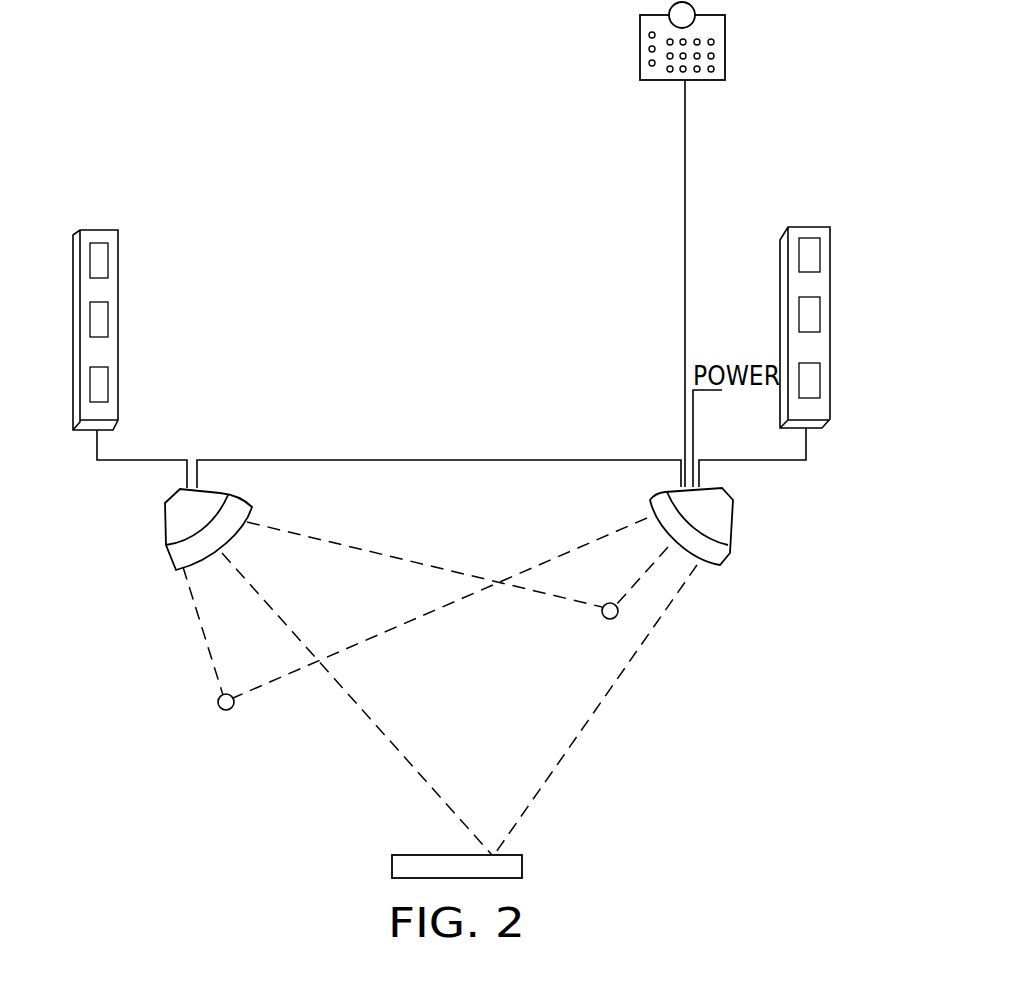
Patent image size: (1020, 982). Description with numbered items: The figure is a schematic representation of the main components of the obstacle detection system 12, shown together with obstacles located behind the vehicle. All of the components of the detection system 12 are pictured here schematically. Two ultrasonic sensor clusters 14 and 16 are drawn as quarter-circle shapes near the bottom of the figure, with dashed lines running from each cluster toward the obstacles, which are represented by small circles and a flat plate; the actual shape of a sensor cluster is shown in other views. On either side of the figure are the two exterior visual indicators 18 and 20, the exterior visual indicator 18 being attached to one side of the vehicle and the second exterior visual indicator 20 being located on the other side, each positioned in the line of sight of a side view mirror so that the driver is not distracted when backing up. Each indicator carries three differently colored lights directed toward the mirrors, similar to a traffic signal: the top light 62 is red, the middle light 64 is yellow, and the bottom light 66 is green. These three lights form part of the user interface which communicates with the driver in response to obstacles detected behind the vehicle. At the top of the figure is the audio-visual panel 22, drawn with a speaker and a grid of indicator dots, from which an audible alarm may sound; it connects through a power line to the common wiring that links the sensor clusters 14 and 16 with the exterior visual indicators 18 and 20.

The obstacle detection system 12 is at (318, 255).
The sensor cluster 14 is at (165, 537).
The sensor cluster 16 is at (735, 523).
The exterior visual indicator 18 is at (115, 330).
The second exterior visual indicator 20 is at (830, 340).
The audio-visual panel 22 is at (725, 52).
The top light 62 is at (98, 260).
The middle light 64 is at (98, 322).
The bottom light 66 is at (98, 388).